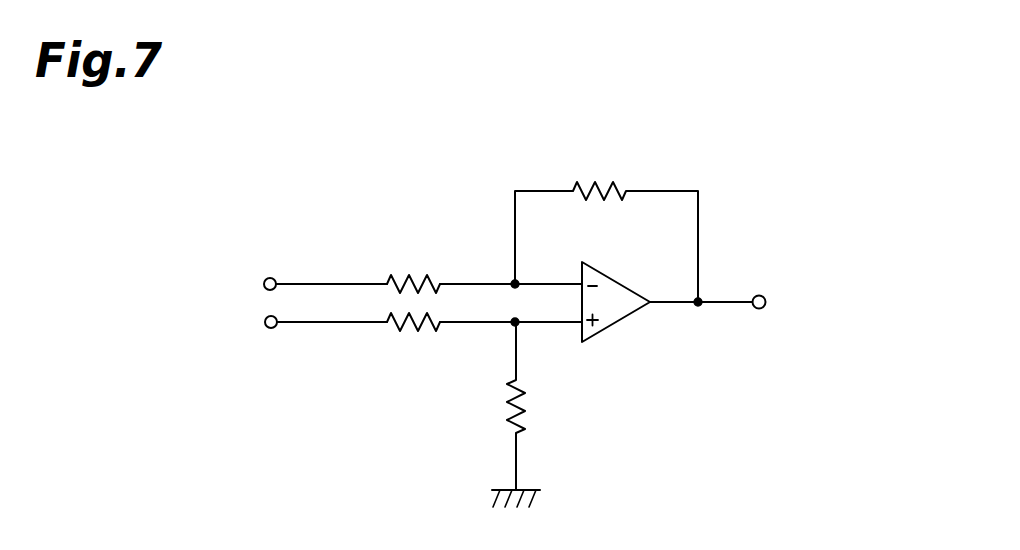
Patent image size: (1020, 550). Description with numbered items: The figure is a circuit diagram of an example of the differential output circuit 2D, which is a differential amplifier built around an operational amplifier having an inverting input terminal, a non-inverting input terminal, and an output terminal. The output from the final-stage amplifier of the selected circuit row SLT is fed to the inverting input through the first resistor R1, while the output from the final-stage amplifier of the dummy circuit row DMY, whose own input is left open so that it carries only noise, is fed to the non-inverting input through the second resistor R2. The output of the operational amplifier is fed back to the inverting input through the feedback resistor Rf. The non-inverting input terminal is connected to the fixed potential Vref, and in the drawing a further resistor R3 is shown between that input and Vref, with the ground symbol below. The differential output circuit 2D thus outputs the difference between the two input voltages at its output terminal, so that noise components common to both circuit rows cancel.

The differential output circuit 2D is at (742, 224).
The first resistor R1 is at (416, 275).
The second resistor R2 is at (427, 330).
The resistor R3 is at (510, 420).
The feedback resistor Rf is at (606, 182).
The fixed potential Vref is at (523, 490).